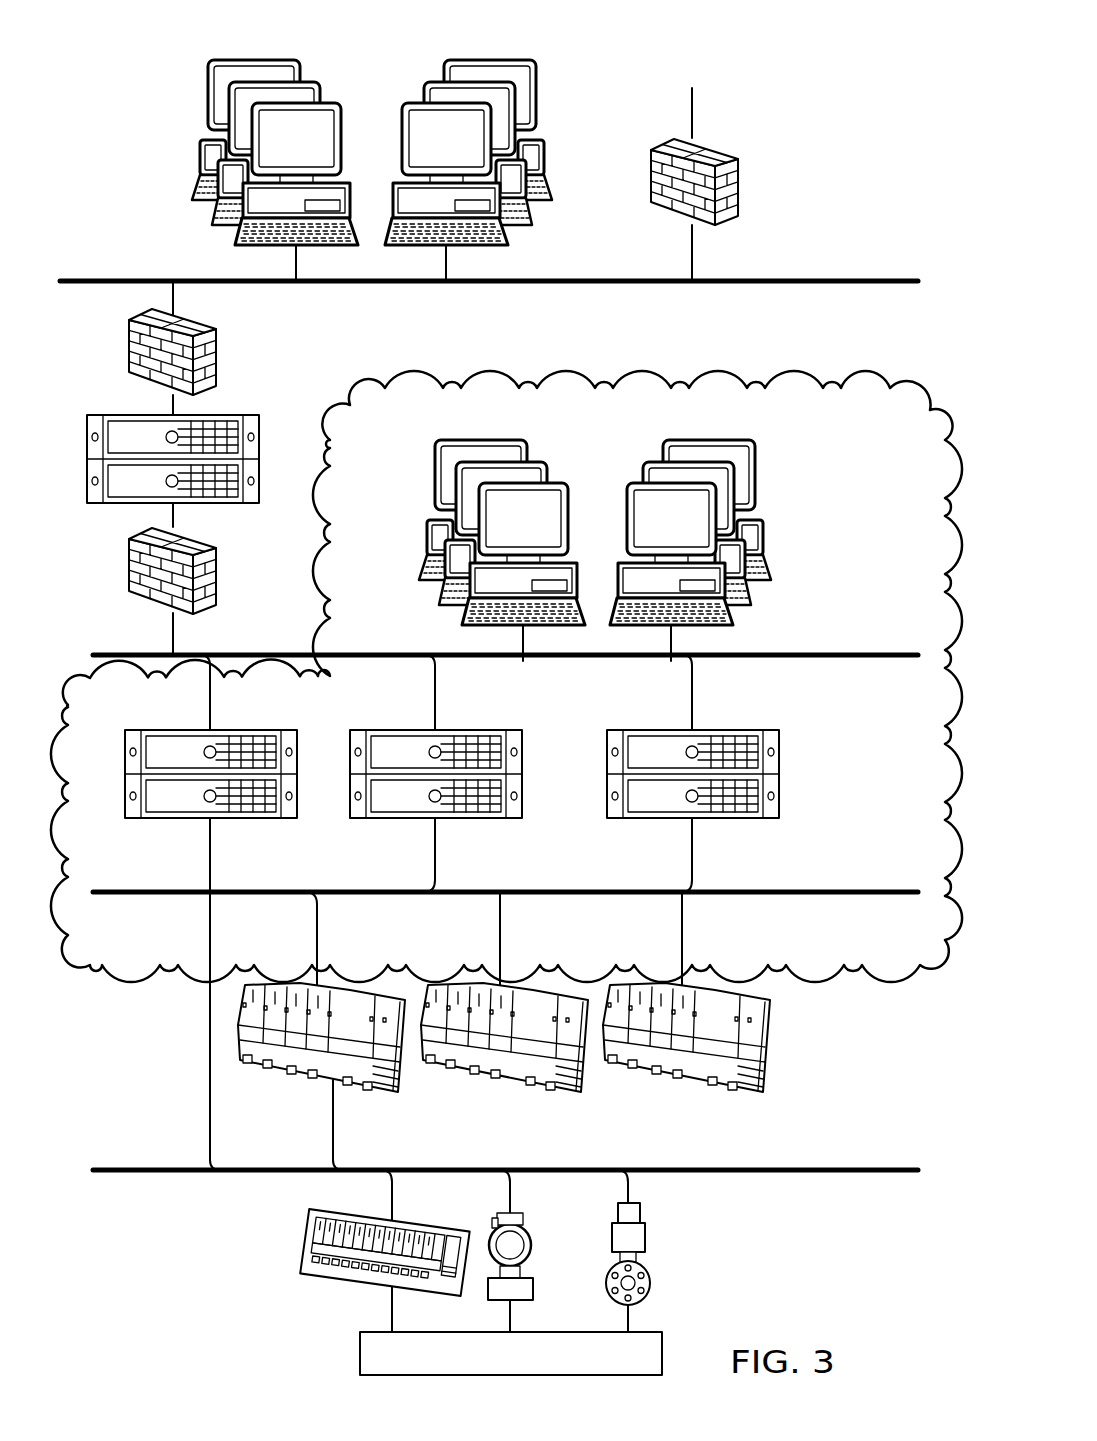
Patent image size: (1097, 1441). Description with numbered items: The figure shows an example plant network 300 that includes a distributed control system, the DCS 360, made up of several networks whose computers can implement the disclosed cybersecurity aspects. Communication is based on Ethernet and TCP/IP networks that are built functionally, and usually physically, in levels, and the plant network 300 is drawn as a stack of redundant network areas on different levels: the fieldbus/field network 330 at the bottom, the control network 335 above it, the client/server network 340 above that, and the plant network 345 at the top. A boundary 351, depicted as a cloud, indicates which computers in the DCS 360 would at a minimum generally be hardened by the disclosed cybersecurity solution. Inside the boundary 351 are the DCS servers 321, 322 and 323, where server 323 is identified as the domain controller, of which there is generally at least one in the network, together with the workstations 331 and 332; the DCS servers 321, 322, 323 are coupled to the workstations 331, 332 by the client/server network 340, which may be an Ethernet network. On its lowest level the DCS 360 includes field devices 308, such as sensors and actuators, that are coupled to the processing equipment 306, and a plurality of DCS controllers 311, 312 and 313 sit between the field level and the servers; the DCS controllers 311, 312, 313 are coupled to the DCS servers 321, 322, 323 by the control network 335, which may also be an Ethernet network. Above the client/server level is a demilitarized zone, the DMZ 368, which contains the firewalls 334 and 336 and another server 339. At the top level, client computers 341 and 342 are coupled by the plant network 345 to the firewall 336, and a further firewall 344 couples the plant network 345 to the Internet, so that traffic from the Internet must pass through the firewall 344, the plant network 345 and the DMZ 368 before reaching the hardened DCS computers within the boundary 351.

The plant network 300 is at (832, 81).
The processing equipment 306 is at (358, 1352).
The field devices 308 is at (275, 1252).
The DCS controller 311 is at (290, 1072).
The DCS controller 312 is at (473, 1072).
The DCS controller 313 is at (655, 1072).
The DCS server 321 is at (173, 820).
The DCS server 322 is at (398, 820).
The domain controller 323 is at (780, 752).
The fieldbus/field network 330 is at (848, 1172).
The workstation 331 is at (424, 475).
The workstation 332 is at (771, 475).
The firewall 334 is at (217, 585).
The control network 335 is at (847, 895).
The firewall 336 is at (217, 352).
The server 339 is at (113, 506).
The client/server network 340 is at (713, 657).
The client computer 341 is at (201, 93).
The client computer 342 is at (541, 93).
The firewall 344 is at (737, 175).
The plant network 345 is at (848, 283).
The boundary 351 is at (746, 385).
The DCS 360 is at (506, 735).
The demilitarized zone 368 is at (187, 473).